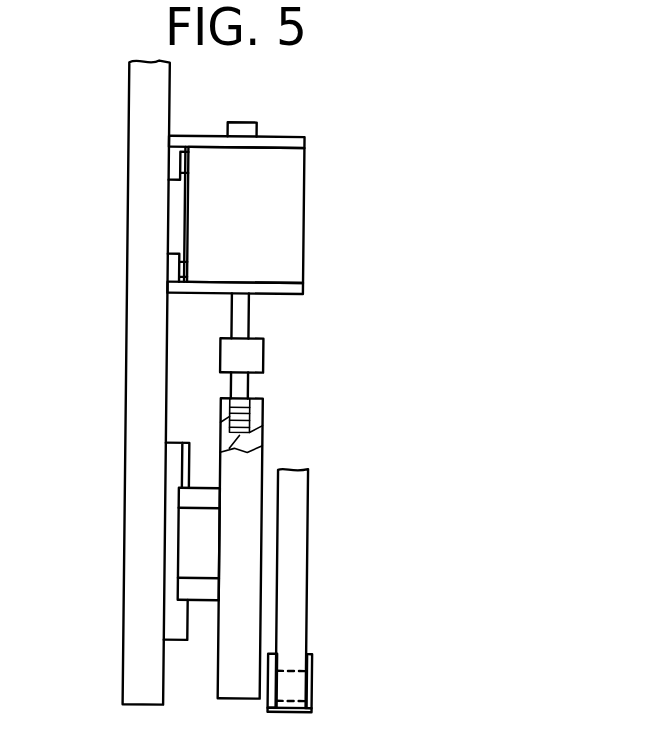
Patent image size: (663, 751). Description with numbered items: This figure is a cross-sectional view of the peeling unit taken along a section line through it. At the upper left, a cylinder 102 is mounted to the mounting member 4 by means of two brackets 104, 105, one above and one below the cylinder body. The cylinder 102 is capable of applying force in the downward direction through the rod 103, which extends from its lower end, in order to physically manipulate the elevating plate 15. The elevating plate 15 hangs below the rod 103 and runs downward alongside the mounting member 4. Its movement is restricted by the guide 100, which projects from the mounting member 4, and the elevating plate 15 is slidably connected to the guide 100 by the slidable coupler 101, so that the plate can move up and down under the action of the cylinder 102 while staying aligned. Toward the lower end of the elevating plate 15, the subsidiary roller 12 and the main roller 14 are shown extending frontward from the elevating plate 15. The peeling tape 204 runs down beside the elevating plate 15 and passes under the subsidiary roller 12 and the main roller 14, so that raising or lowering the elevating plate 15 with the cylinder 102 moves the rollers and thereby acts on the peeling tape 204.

The mounting member 4 is at (152, 118).
The bracket 104 is at (272, 142).
The cylinder 102 is at (280, 222).
The bracket 105 is at (291, 287).
The rod 103 is at (243, 328).
The elevating plate 15 is at (254, 469).
The guide 100 is at (173, 482).
The slidable coupler 101 is at (192, 548).
The peeling tape 204 is at (300, 587).
The main roller 14 is at (310, 653).
The subsidiary roller 12 is at (310, 683).